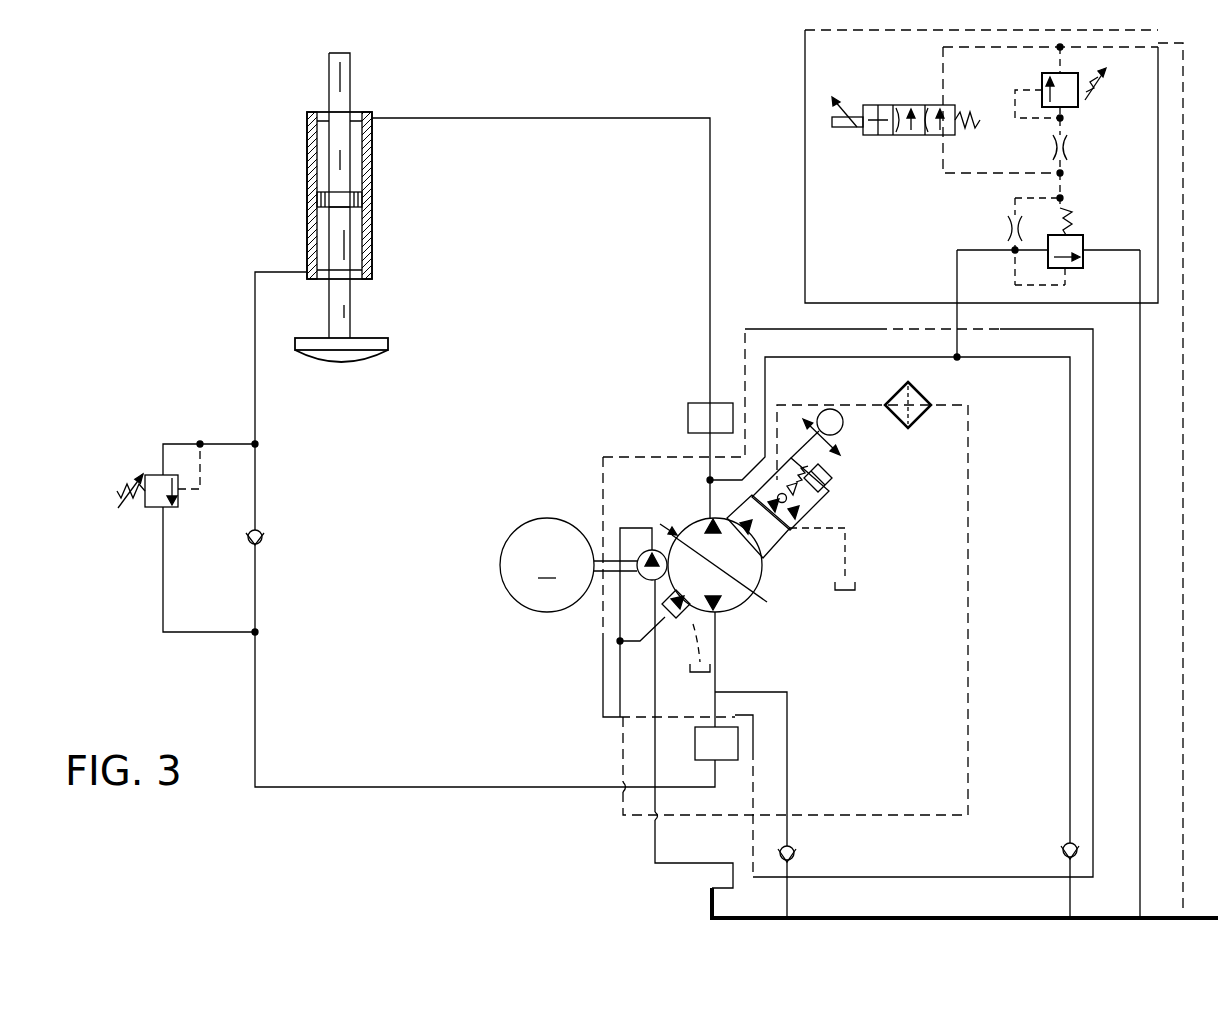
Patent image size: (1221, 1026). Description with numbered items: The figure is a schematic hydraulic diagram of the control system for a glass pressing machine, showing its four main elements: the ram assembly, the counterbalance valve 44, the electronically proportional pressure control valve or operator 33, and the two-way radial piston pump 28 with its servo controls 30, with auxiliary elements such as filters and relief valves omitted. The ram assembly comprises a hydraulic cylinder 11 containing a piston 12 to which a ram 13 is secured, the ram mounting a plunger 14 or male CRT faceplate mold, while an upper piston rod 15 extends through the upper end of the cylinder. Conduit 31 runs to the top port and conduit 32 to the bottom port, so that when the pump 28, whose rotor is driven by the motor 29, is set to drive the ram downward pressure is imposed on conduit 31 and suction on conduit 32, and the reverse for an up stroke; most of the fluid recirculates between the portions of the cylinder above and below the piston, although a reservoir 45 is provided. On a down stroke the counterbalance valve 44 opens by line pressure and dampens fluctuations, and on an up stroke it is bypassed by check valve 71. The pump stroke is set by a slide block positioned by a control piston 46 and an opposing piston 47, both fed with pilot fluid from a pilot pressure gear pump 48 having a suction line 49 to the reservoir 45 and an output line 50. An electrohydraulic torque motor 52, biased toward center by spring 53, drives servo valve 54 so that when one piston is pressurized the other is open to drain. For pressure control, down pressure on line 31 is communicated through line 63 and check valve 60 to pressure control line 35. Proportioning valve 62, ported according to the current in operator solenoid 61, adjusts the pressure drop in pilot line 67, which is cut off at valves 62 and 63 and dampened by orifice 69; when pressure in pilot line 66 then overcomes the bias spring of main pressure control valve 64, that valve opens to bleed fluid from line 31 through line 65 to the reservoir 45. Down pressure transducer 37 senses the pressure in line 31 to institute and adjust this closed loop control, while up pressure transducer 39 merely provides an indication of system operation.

The hydraulic cylinder 11 is at (372, 255).
The piston 12 is at (365, 206).
The ram 13 is at (352, 309).
The plunger 14 is at (370, 340).
The upper piston rod 15 is at (352, 102).
The two-way radial piston pump 28 is at (762, 600).
The electric motor 29 is at (553, 518).
The servo controls 30 is at (633, 456).
The conduit 31 is at (554, 118).
The conduit 32 is at (255, 350).
The proportional pressure control operator 33 is at (798, 60).
The pressure control line 35 is at (965, 320).
The down pressure transducer 37 is at (700, 403).
The up pressure transducer 39 is at (703, 762).
The counterbalance valve 44 is at (150, 475).
The reservoir 45 is at (860, 917).
The control piston 46 is at (772, 550).
The opposing piston 47 is at (666, 612).
The pilot pressure gear pump 48 is at (640, 580).
The suction line 49 is at (655, 710).
The output line 50 is at (620, 667).
The electrohydraulic torque motor 52 is at (843, 428).
The spring 53 is at (812, 470).
The servo valve 54 is at (822, 495).
The check valve 60 is at (1065, 843).
The operator solenoid 61 is at (850, 112).
The proportioning valve 62 is at (898, 105).
The line / manual override valve 63 is at (1066, 75).
The main pressure control valve 64 is at (1084, 240).
The line 65 is at (1183, 552).
The pilot line 66 is at (1065, 288).
The pilot line 67 is at (1020, 198).
The orifice 69 is at (1008, 228).
The check valve 71 is at (260, 530).